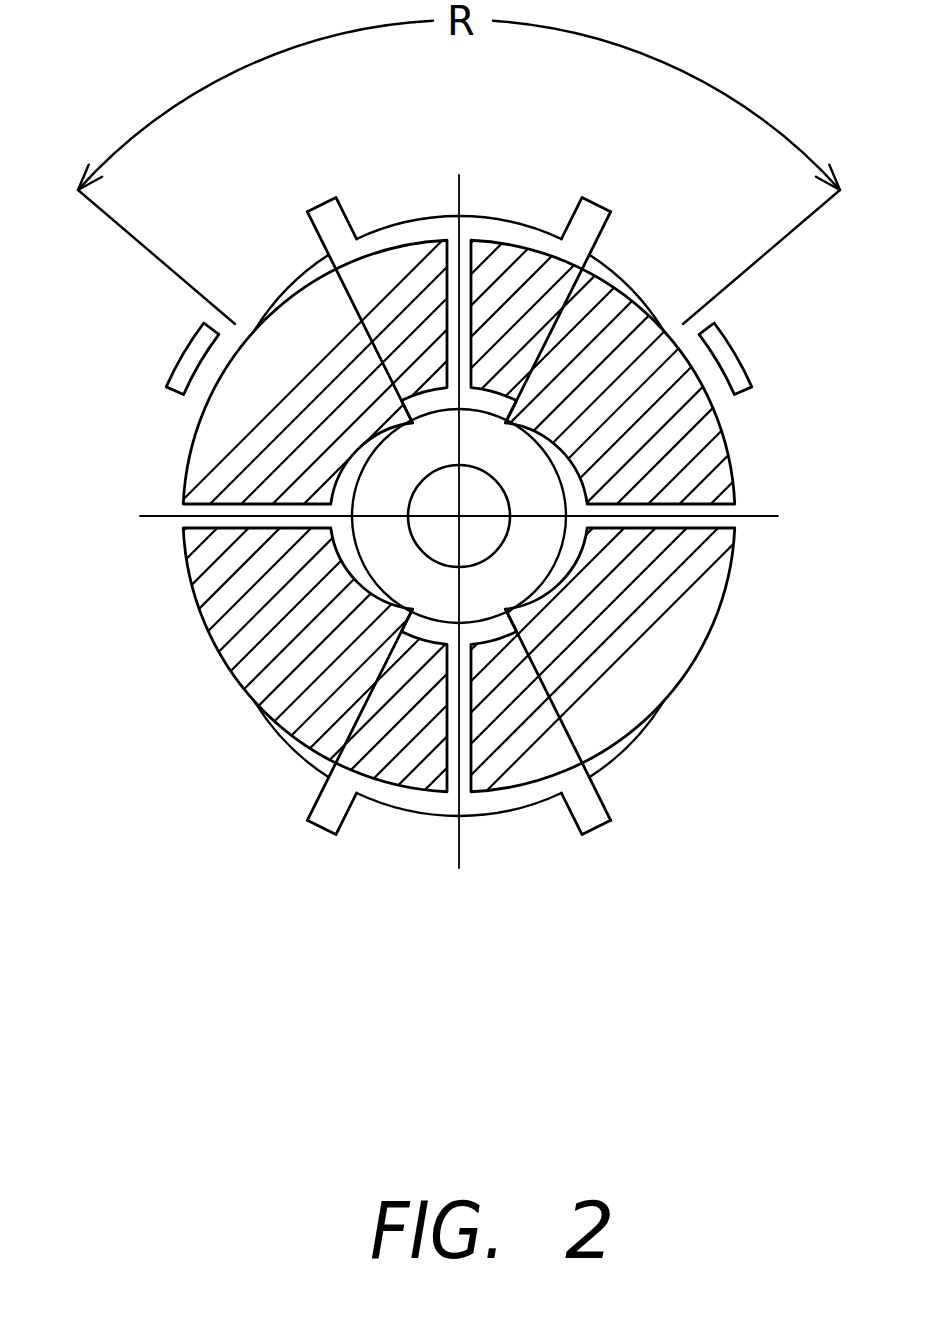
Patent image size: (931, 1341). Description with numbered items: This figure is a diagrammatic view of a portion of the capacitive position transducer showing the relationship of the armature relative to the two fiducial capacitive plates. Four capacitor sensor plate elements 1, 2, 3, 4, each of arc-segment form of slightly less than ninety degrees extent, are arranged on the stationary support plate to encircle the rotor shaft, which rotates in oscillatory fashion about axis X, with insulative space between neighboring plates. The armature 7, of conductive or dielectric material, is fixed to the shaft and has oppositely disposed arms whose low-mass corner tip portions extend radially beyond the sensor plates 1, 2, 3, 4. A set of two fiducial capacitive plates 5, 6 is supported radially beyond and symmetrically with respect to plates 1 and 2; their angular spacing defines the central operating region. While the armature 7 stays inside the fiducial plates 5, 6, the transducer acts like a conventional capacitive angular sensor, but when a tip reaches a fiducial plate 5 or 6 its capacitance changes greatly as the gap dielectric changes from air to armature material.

The capacitor sensor plate element 1 is at (288, 293).
The capacitor sensor plate element 2 is at (610, 277).
The capacitor sensor plate element 3 is at (688, 678).
The capacitor sensor plate element 4 is at (248, 700).
The fiducial capacitive plate 5 is at (165, 380).
The fiducial capacitive plate 6 is at (757, 377).
The armature 7 is at (583, 200).
The axis X is at (458, 516).